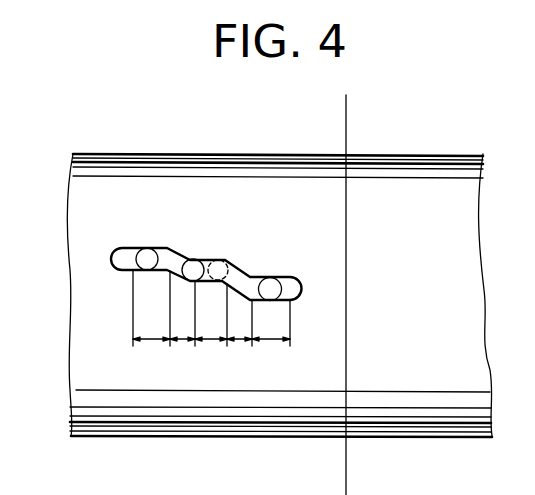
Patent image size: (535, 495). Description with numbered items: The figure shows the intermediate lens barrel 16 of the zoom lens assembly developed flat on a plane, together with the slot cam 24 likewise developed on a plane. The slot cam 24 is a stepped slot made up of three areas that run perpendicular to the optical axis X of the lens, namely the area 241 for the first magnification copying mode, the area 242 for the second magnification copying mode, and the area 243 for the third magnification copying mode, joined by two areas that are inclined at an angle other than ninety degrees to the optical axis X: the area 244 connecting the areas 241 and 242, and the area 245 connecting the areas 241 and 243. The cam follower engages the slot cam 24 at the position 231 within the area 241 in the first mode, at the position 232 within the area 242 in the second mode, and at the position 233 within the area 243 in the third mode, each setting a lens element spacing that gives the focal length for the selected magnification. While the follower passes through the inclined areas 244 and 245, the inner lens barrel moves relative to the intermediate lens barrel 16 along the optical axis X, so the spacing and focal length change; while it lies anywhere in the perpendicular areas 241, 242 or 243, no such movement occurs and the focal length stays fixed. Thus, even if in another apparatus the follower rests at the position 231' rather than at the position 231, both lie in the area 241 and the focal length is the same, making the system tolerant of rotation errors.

The intermediate lens barrel 16 is at (437, 182).
The optical axis X is at (347, 133).
The slot cam 24 is at (166, 248).
The follower position for m3 magnification 233 is at (143, 248).
The follower position for m1 magnification 231 is at (207, 245).
The alternative follower position for m1 magnification 231' is at (248, 251).
The follower position for m2 magnification 232 is at (273, 280).
The m3 magnification area 243 is at (140, 341).
The inclined connecting area 245 is at (183, 344).
The m1 magnification area 241 is at (208, 345).
The inclined connecting area 244 is at (238, 345).
The m2 magnification area 242 is at (282, 343).